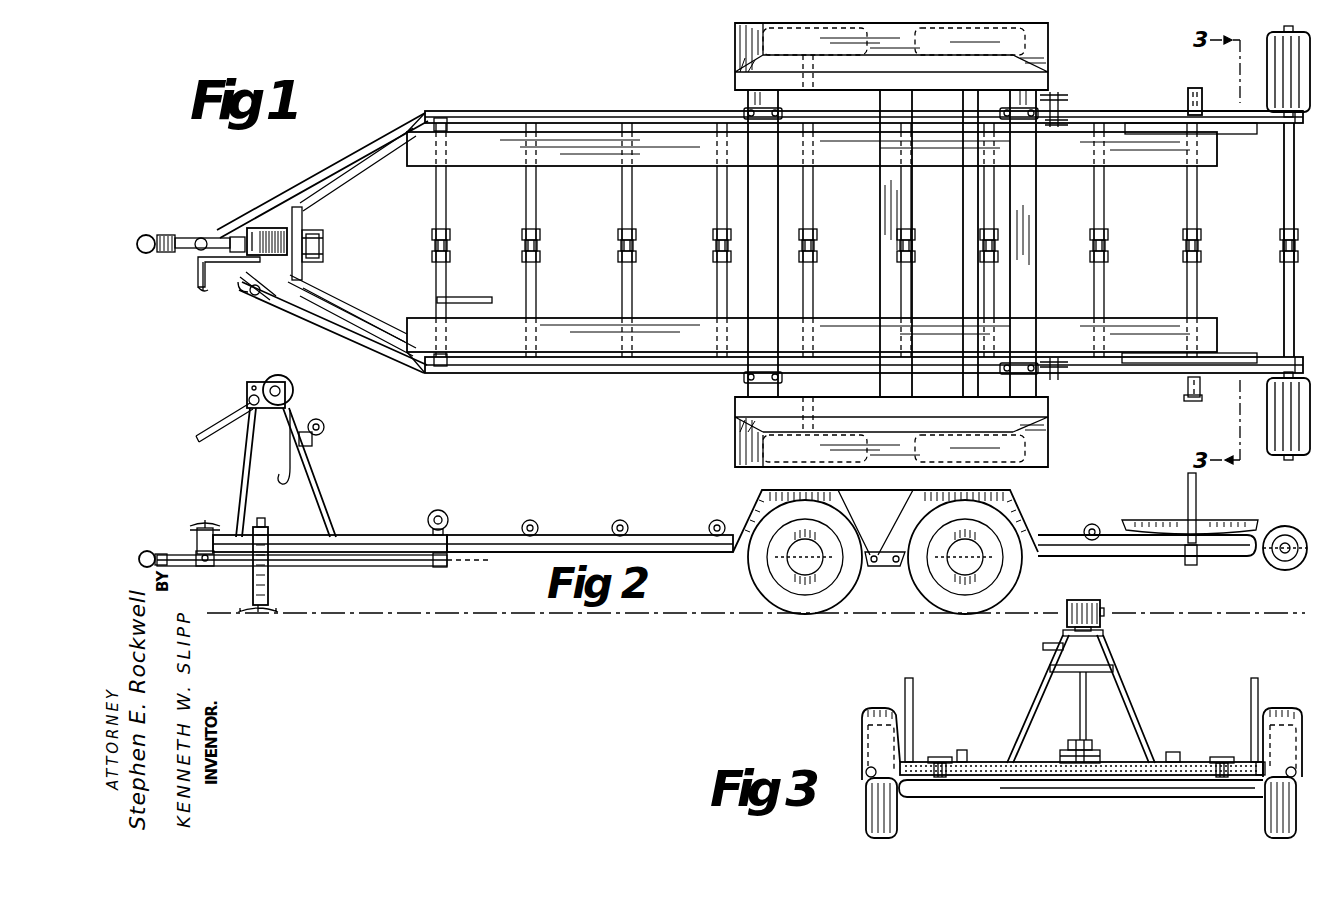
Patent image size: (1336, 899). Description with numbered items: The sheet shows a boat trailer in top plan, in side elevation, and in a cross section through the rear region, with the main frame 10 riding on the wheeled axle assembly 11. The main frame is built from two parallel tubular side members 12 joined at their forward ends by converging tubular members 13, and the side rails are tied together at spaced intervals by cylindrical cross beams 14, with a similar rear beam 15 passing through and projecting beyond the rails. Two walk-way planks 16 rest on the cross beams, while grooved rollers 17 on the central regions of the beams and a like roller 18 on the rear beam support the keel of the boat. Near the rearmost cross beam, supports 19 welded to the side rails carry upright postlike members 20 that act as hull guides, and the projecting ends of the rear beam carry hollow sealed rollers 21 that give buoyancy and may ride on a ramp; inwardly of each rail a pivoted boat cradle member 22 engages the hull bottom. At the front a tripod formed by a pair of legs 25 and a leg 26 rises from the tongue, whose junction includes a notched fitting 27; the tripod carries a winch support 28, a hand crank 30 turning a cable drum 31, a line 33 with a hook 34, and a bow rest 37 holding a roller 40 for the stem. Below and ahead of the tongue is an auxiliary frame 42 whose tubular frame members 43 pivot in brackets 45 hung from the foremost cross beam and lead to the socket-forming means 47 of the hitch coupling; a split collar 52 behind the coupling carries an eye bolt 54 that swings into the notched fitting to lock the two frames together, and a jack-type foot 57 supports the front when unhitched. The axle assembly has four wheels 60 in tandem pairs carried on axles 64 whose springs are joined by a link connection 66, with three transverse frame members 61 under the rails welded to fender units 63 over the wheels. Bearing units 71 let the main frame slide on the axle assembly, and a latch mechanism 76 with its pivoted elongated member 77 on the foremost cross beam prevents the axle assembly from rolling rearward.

In FIG. 1, the main frame 10 is at (1110, 113).
In FIG. 3, the main frame 10 is at (984, 762).
In FIG. 2, the wheeled axle assembly 11 is at (750, 576).
In FIG. 3, the wheeled axle assembly 11 is at (1068, 797).
In FIG. 1, the longitudinal side members 12 is at (562, 112).
In FIG. 2, the longitudinal side members 12 is at (657, 534).
In FIG. 3, the longitudinal side members 12 is at (950, 757).
In FIG. 1, the tubular members 13 is at (364, 170).
In FIG. 2, the tubular members 13 is at (375, 534).
In FIG. 1, the cross beams 14 is at (447, 213).
In FIG. 3, the cross beams 14 is at (1174, 760).
In FIG. 1, the rear beam 15 is at (1285, 185).
In FIG. 1, the walk-way planks 16 is at (500, 145).
In FIG. 1, the grooved rollers 17 is at (432, 245).
In FIG. 2, the grooved rollers 17 is at (443, 510).
In FIG. 3, the grooved rollers 17 is at (1100, 748).
In FIG. 1, the roller 18 is at (1280, 250).
In FIG. 1, the supports 19 is at (1202, 112).
In FIG. 2, the supports 19 is at (1190, 565).
In FIG. 3, the supports 19 is at (1268, 772).
In FIG. 1, the postlike members 20 is at (1193, 88).
In FIG. 2, the postlike members 20 is at (1196, 490).
In FIG. 3, the postlike members 20 is at (914, 680).
In FIG. 1, the hollow sealed rollers 21 is at (1283, 55).
In FIG. 2, the hollow sealed rollers 21 is at (1275, 566).
In FIG. 1, the boat cradle members 22 is at (1228, 134).
In FIG. 2, the boat cradle members 22 is at (1250, 520).
In FIG. 1, the tripod legs 25 is at (325, 188).
In FIG. 2, the tripod legs 25 is at (333, 515).
In FIG. 3, the tripod legs 25 is at (1038, 700).
In FIG. 1, the tripod leg 26 is at (1188, 398).
In FIG. 2, the tripod leg 26 is at (237, 478).
In FIG. 3, the tripod leg 26 is at (1087, 712).
In FIG. 1, the notched fitting 27 is at (198, 238).
In FIG. 2, the notched fitting 27 is at (202, 525).
In FIG. 1, the winch support 28 is at (245, 232).
In FIG. 2, the winch support 28 is at (258, 382).
In FIG. 1, the hand crank 30 is at (207, 292).
In FIG. 2, the hand crank 30 is at (208, 432).
In FIG. 3, the hand crank 30 is at (1043, 646).
In FIG. 1, the cable drum 31 is at (270, 230).
In FIG. 2, the cable drum 31 is at (290, 380).
In FIG. 3, the cable drum 31 is at (1100, 602).
In FIG. 2, the line 33 is at (290, 452).
In FIG. 2, the hook 34 is at (281, 488).
In FIG. 1, the bow rest 37 is at (305, 222).
In FIG. 2, the bow rest 37 is at (313, 441).
In FIG. 3, the bow rest 37 is at (1050, 667).
In FIG. 1, the roller 40 is at (323, 244).
In FIG. 2, the roller 40 is at (325, 428).
In FIG. 1, the auxiliary frame 42 is at (370, 314).
In FIG. 2, the auxiliary frame 42 is at (385, 567).
In FIG. 1, the tubular frame members 43 is at (392, 148).
In FIG. 1, the brackets 45 is at (436, 118).
In FIG. 1, the socket-forming means 47 is at (144, 235).
In FIG. 2, the socket-forming means 47 is at (143, 552).
In FIG. 2, the split collar 52 is at (207, 566).
In FIG. 1, the eye bolt 54 is at (200, 257).
In FIG. 2, the eye bolt 54 is at (190, 525).
In FIG. 1, the foot 57 is at (268, 303).
In FIG. 2, the foot 57 is at (270, 583).
In FIG. 2, the wheels 60 is at (848, 590).
In FIG. 3, the wheels 60 is at (888, 825).
In FIG. 1, the frame members 61 is at (1050, 262).
In FIG. 3, the frame members 61 is at (1176, 790).
In FIG. 1, the fender units 63 is at (1040, 48).
In FIG. 2, the fender units 63 is at (1035, 503).
In FIG. 3, the fender units 63 is at (880, 720).
In FIG. 1, the axles 64 is at (967, 290).
In FIG. 3, the axles 64 is at (1000, 798).
In FIG. 2, the link connection 66 is at (893, 567).
In FIG. 1, the bearing units 71 is at (745, 108).
In FIG. 3, the bearing units 71 is at (935, 756).
In FIG. 1, the latch mechanism 76 is at (448, 296).
In FIG. 2, the elongated member 77 is at (450, 566).